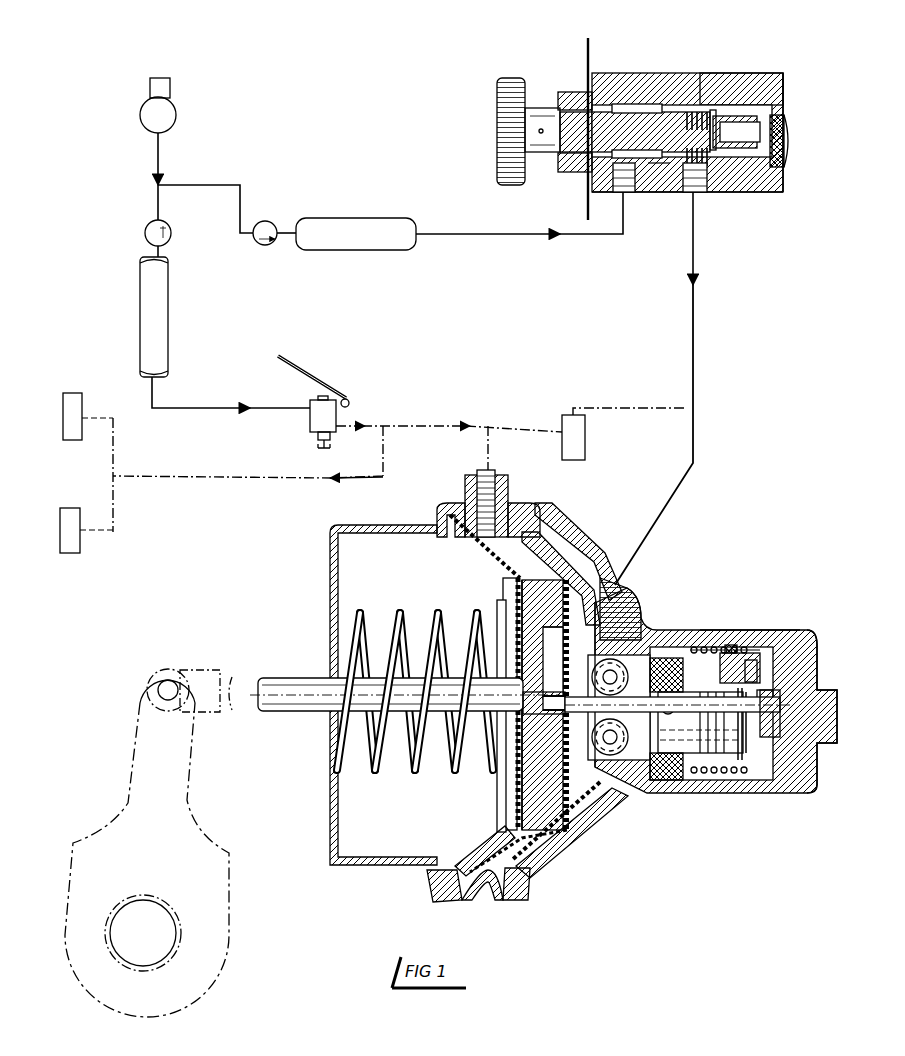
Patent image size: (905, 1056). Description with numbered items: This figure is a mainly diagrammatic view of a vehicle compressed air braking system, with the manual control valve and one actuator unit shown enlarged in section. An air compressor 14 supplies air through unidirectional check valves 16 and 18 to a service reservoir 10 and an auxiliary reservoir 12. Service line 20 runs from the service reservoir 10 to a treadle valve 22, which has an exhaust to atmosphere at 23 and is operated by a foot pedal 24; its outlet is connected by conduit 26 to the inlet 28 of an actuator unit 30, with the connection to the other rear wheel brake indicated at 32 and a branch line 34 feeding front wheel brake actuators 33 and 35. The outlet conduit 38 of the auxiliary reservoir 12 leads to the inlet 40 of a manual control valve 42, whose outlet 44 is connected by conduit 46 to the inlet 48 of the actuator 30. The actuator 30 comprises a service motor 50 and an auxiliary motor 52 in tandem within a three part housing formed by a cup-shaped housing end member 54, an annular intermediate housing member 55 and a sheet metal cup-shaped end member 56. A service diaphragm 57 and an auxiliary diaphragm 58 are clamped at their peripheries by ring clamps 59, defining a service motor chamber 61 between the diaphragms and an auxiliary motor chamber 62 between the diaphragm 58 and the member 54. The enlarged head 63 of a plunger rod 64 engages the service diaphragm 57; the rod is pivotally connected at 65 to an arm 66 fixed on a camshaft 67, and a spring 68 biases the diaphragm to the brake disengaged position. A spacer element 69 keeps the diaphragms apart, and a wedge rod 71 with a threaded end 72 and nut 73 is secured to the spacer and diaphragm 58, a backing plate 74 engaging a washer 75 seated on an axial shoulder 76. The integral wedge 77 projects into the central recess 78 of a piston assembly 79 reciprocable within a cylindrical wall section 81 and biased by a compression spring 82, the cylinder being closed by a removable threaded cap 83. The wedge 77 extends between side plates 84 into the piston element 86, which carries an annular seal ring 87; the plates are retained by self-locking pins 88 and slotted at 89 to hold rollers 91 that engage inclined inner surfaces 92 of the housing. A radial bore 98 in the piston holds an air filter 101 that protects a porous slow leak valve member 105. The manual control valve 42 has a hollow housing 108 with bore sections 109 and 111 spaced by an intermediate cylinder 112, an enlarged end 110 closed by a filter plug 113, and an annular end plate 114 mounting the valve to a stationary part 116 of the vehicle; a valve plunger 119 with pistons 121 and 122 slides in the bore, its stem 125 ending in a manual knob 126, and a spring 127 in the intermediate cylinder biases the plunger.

The service reservoir 10 is at (140, 298).
The auxiliary reservoir 12 is at (350, 217).
The air compressor 14 is at (175, 108).
The unidirectional check valve 16 is at (171, 236).
The unidirectional check valve 18 is at (271, 222).
The service line 20 is at (222, 410).
The treadle valve 22 is at (337, 416).
The exhaust to atmosphere 23 is at (331, 448).
The foot pedal 24 is at (302, 372).
The conduit 26 is at (447, 430).
The inlet 28 is at (490, 478).
The actuator unit 30 is at (642, 609).
The connection to other rear wheel brake 32 is at (584, 452).
The front wheel brake actuator 33 is at (82, 404).
The branch line 34 is at (263, 480).
The front wheel brake actuator 35 is at (80, 538).
The outlet conduit 38 is at (478, 238).
The inlet 40 is at (634, 190).
The manual control valve 42 is at (674, 72).
The outlet 44 is at (702, 192).
The conduit 46 is at (694, 291).
The inlet 48 is at (612, 598).
The service motor 50 is at (443, 507).
The auxiliary motor 52 is at (563, 576).
The cup-shaped housing end member 54 is at (581, 594).
The annular intermediate housing member 55 is at (485, 903).
The cup-shaped end member 56 is at (396, 873).
The service diaphragm 57 is at (480, 860).
The auxiliary diaphragm 58 is at (512, 846).
The ring clamps 59 is at (450, 903).
The service motor chamber 61 is at (546, 581).
The auxiliary motor chamber 62 is at (612, 632).
The enlarged head 63 is at (506, 778).
The plunger rod 64 is at (298, 676).
The pivotal connection 65 is at (172, 680).
The arm 66 is at (186, 752).
The camshaft 67 is at (178, 945).
The spring 68 is at (425, 758).
The spacer element 69 is at (525, 795).
The wedge rod 71 is at (545, 750).
The threaded end 72 is at (541, 735).
The nut 73 is at (525, 690).
The backing plate 74 is at (575, 832).
The washer 75 is at (598, 812).
The axial shoulder 76 is at (566, 708).
The wedge 77 is at (626, 744).
The central recess 78 is at (778, 700).
The piston assembly 79 is at (732, 643).
The cylindrical wall section 81 is at (775, 640).
The compression spring 82 is at (736, 650).
The removable threaded cap 83 is at (802, 648).
The side plate 84 is at (645, 790).
The piston element 86 is at (692, 782).
The annular seal ring 87 is at (733, 772).
The self-locking pins 88 is at (668, 756).
The slots 89 is at (656, 715).
The rollers 91 is at (622, 683).
The inclined inner surfaces 92 is at (630, 668).
The radial bore 98 is at (706, 648).
The air filter 101 is at (762, 686).
The slow leak valve member 105 is at (758, 672).
The hollow housing 108 is at (760, 85).
The cylindrical section 109 is at (640, 87).
The enlarged bore end 110 is at (770, 193).
The cylindrical section 111 is at (785, 87).
The intermediate cylinder 112 is at (670, 180).
The filter plug 113 is at (788, 136).
The annular end plate 114 is at (604, 73).
The stationary part 116 is at (586, 72).
The valve plunger 119 is at (718, 96).
The piston 121 is at (694, 92).
The piston 122 is at (786, 122).
The stem 125 is at (552, 160).
The manual knob 126 is at (496, 130).
The spring 127 is at (726, 95).